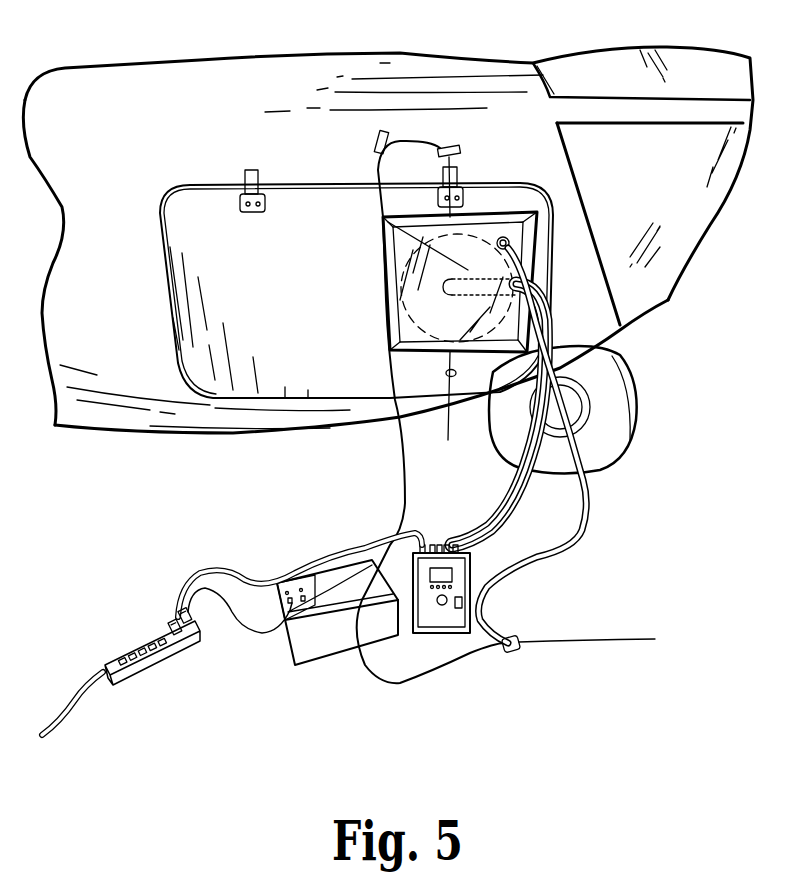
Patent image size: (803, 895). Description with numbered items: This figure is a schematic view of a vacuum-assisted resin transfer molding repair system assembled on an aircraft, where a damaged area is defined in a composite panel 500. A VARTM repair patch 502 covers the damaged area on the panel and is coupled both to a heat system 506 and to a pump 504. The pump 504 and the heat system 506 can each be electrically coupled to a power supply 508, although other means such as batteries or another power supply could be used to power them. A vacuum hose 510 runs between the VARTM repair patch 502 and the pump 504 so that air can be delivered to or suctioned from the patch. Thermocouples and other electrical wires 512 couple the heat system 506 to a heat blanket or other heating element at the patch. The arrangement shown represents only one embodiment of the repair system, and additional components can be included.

The composite panel 500 is at (418, 97).
The VARTM repair patch 502 is at (383, 225).
The pump 504 is at (343, 600).
The heat system 506 is at (448, 617).
The power supply 508 is at (150, 657).
The vacuum hose 510 is at (587, 500).
The thermocouples and other electrical wires 512 is at (615, 340).